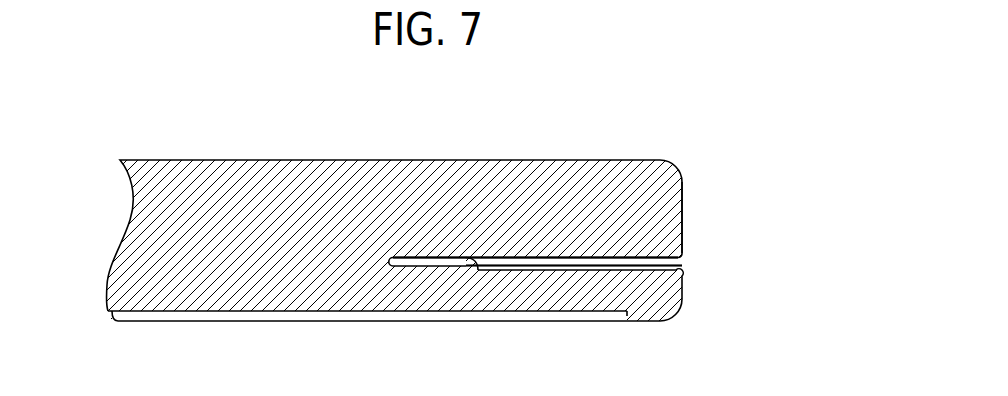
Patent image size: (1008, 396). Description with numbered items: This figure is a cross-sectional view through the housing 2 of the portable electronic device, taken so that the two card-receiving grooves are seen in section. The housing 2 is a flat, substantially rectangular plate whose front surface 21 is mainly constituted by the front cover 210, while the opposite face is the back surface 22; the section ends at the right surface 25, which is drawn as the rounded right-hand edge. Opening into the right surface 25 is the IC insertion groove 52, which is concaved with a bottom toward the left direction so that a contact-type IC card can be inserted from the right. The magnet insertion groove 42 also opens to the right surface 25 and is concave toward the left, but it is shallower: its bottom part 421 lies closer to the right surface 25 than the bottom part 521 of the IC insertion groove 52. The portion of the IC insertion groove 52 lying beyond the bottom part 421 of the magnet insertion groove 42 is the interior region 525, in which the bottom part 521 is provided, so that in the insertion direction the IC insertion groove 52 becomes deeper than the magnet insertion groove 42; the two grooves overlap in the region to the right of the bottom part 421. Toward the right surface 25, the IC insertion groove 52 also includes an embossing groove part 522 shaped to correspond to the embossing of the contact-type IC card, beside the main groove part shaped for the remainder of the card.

The housing 2 is at (439, 223).
The back surface 22 is at (427, 160).
The right surface 25 is at (683, 207).
The magnet insertion groove 42 is at (683, 262).
The IC insertion groove 52 is at (537, 262).
The embossing groove part 522 is at (683, 278).
The front surface 21 is at (215, 321).
The front cover 210 is at (295, 311).
The bottom part of the IC insertion groove 521 is at (391, 264).
The interior region 525 is at (441, 263).
The bottom part of the magnet insertion groove 421 is at (469, 262).